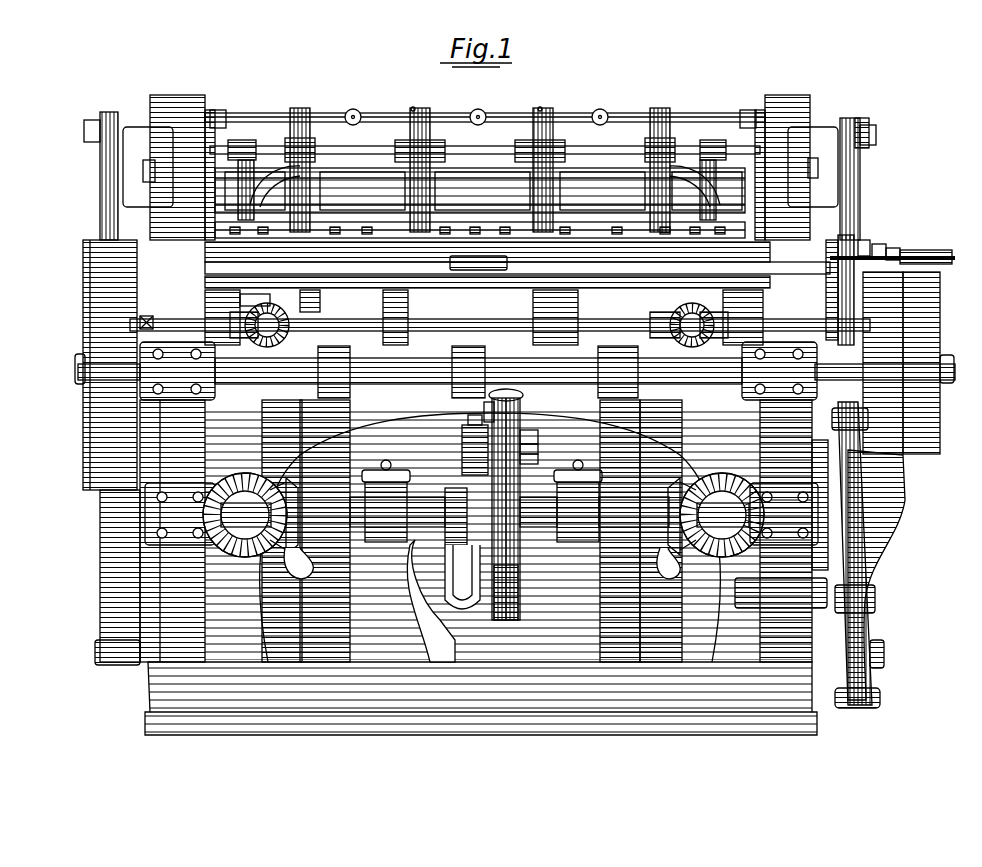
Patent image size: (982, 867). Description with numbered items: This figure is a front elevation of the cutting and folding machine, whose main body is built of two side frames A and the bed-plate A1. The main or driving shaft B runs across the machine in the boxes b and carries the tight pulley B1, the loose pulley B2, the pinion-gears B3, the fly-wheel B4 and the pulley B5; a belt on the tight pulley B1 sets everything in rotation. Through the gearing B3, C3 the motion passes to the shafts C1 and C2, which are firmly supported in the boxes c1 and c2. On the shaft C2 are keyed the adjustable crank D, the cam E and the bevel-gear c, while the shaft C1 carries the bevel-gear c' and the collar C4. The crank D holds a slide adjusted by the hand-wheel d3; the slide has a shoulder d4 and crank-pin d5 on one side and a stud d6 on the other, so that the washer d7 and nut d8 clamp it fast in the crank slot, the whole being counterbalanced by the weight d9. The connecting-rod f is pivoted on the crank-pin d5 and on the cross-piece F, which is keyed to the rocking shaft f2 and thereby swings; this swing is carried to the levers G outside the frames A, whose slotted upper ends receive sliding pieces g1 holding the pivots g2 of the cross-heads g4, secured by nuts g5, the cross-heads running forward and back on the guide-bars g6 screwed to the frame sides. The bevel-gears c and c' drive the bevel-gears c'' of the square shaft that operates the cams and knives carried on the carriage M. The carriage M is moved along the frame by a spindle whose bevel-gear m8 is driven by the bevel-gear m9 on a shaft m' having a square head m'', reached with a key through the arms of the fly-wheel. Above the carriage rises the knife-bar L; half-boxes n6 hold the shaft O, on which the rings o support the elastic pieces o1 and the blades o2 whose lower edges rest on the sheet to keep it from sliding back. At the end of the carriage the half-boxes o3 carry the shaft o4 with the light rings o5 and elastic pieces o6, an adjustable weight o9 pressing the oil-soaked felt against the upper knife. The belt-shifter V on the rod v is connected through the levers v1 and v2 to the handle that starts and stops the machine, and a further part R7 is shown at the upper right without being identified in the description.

The side frame A is at (176, 97).
The bed-plate A1 is at (481, 698).
The main or driving shaft B is at (74, 368).
The tight pulley B1 is at (883, 363).
The loose pulley B2 is at (928, 363).
The pinion-gear B3 is at (350, 350).
The fly-wheel B4 is at (110, 365).
The pulley B5 is at (485, 350).
The box b is at (150, 394).
The shaft C1 is at (140, 515).
The shaft C2 is at (850, 512).
The gear C3 is at (480, 495).
The collar C4 is at (448, 506).
The bevel-gear c is at (676, 528).
The bevel-gear c' is at (291, 528).
The bevel-gear c'' is at (483, 505).
The box c1 is at (418, 486).
The box c2 is at (669, 545).
The adjustable crank D is at (520, 466).
The hand-wheel d3 is at (520, 396).
The shoulder d4 is at (486, 412).
The crank-pin d5 is at (463, 445).
The stud d6 is at (538, 448).
The washer d7 is at (538, 434).
The nut d8 is at (538, 458).
The weight d9 is at (506, 592).
The cam E is at (814, 440).
The cross-piece F is at (431, 601).
The connecting-rod f is at (462, 537).
The rocking shaft f2 is at (94, 652).
The lever G is at (102, 604).
The sliding piece g1 is at (866, 240).
The pivot g2 is at (895, 250).
The cross-head g4 is at (848, 238).
The nut g5 is at (880, 244).
The guide-bar g6 is at (836, 242).
The knife-bar L is at (585, 190).
The carriage M is at (412, 306).
The shaft m' is at (464, 252).
The square head m'' is at (100, 318).
The bevel-gear m8 is at (290, 320).
The bevel-gear m9 is at (650, 320).
The half-box n6 is at (240, 140).
The shaft O is at (508, 146).
The ring o is at (485, 103).
The elastic piece o1 is at (483, 191).
The blade o2 is at (480, 227).
The half-box o3 is at (486, 102).
The shaft o4 is at (296, 128).
The light ring o5 is at (480, 145).
The elastic piece o6 is at (482, 191).
The adjustable weight o9 is at (485, 108).
The rod R7 is at (838, 135).
The belt-shifter V is at (892, 247).
The rod v is at (517, 266).
The lever v1 is at (305, 270).
The lever v2 is at (280, 300).